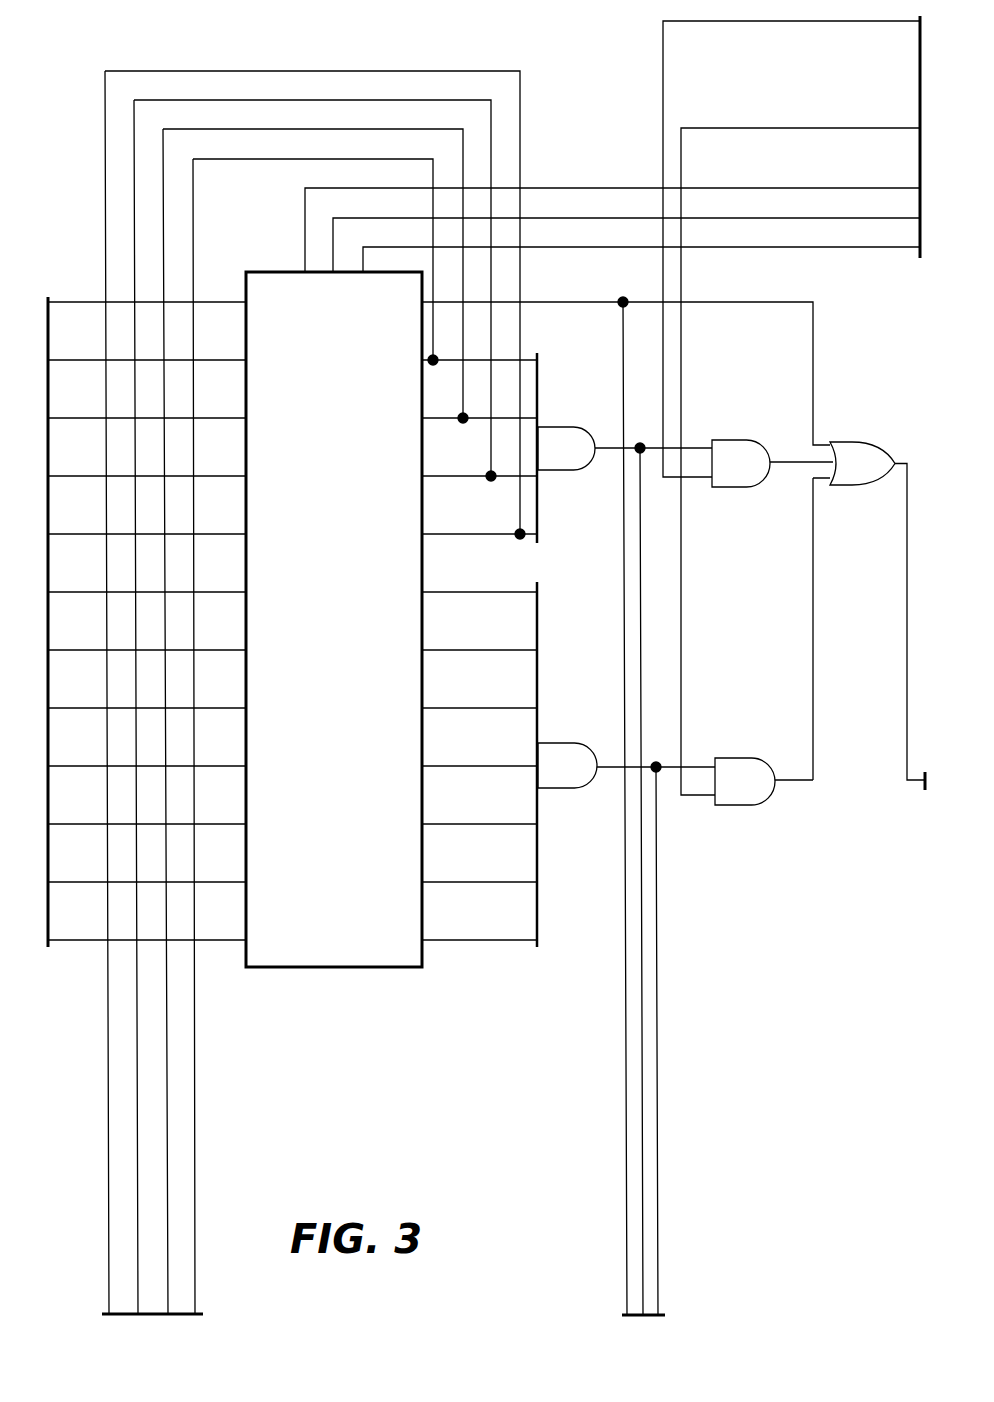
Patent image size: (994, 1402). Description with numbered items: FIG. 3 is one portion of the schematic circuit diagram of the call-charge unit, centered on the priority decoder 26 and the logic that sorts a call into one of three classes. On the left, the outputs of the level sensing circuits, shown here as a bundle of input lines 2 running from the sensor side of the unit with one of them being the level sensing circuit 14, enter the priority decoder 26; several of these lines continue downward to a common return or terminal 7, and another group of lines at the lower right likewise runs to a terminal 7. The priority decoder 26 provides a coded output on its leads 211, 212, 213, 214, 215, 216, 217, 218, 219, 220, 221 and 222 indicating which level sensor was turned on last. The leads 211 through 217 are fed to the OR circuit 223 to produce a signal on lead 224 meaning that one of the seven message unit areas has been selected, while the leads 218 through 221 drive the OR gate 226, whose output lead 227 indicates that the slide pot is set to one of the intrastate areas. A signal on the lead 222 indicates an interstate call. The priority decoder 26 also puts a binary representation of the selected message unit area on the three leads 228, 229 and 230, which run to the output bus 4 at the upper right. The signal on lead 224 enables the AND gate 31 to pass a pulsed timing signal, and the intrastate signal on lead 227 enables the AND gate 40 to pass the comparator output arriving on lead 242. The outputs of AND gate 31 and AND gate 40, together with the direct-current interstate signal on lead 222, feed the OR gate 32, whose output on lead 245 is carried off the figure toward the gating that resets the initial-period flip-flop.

The input bus lines 2 is at (137, 622).
The output bus 4 is at (809, 405).
The bus terminal 7 is at (383, 705).
The level sensing circuit 14 is at (938, 784).
The priority decoder 26 is at (246, 272).
The AND gate 31 is at (768, 757).
The OR gate 32 is at (882, 432).
The AND gate 40 is at (764, 440).
The lead 211 is at (511, 942).
The lead 212 is at (466, 884).
The lead 213 is at (490, 826).
The lead 214 is at (477, 768).
The lead 215 is at (457, 710).
The lead 216 is at (478, 652).
The lead 217 is at (492, 594).
The lead 218 is at (485, 537).
The lead 219 is at (507, 480).
The lead 220 is at (484, 422).
The lead 221 is at (452, 364).
The lead 222 is at (587, 300).
The OR circuit 223 is at (585, 744).
The lead 224 is at (605, 768).
The OR gate 226 is at (588, 471).
The output lead 227 is at (606, 446).
The lead 228 is at (597, 185).
The lead 229 is at (610, 215).
The lead 230 is at (623, 244).
The lead 242 is at (723, 22).
The lead 245 is at (907, 632).